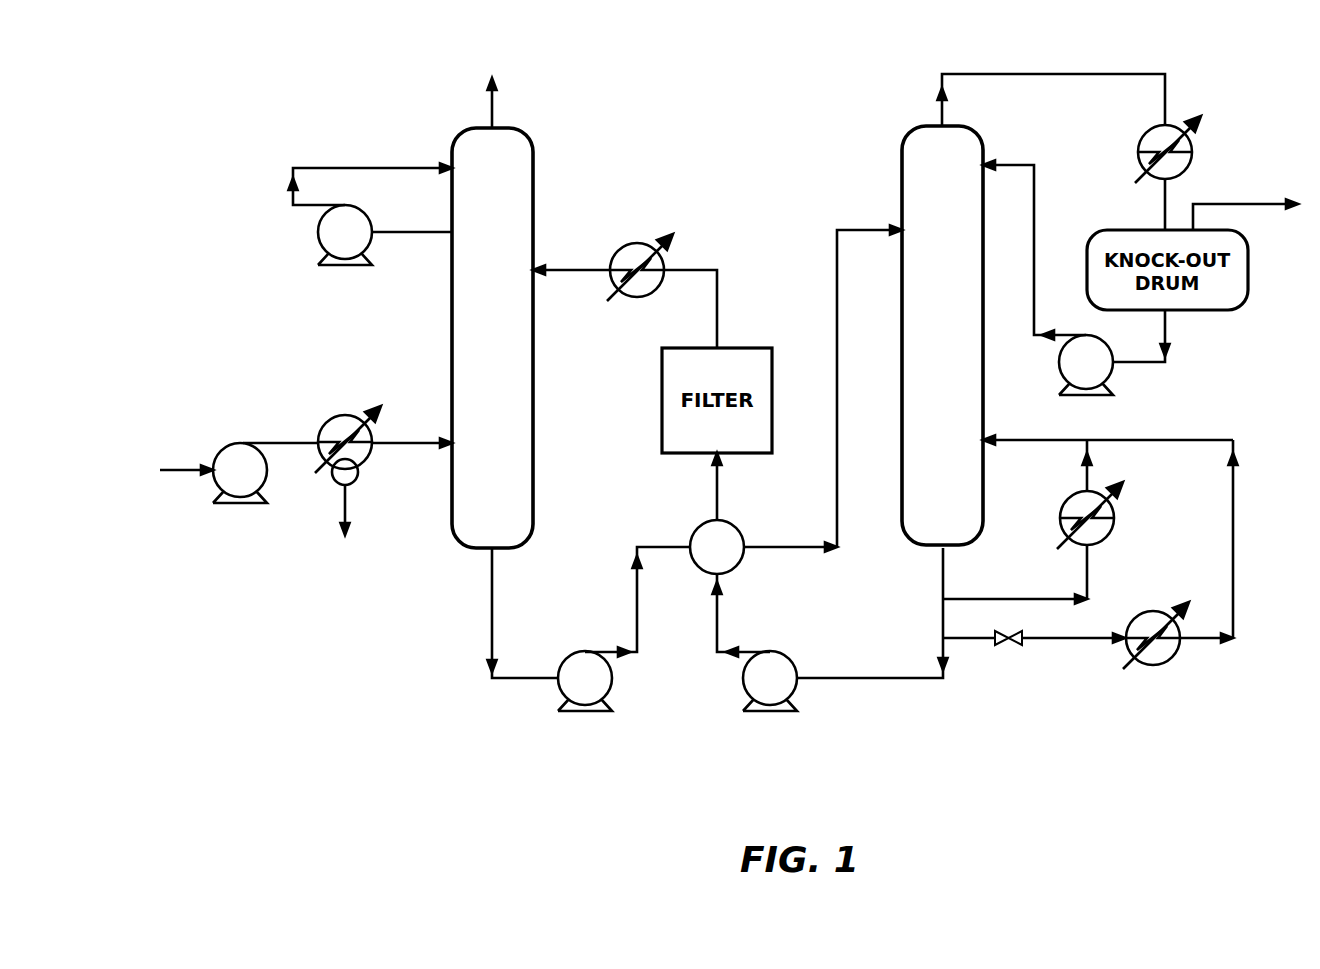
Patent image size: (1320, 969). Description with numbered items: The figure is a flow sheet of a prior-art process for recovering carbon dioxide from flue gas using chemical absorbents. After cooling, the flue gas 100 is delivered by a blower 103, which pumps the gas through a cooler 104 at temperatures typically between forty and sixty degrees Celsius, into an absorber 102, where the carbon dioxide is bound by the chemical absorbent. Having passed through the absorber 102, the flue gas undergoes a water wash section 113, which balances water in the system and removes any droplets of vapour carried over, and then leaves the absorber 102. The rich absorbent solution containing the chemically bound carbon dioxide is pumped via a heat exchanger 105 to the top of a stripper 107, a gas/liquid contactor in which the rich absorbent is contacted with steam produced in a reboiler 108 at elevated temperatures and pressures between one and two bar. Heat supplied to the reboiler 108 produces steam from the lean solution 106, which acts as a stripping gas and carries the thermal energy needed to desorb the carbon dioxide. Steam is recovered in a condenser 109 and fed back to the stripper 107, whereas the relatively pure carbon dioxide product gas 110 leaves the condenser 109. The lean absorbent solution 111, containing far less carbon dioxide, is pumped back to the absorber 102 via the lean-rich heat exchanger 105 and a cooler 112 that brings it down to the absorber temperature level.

The flue gas 100 is at (188, 468).
The absorber 102 is at (533, 148).
The blower 103 is at (213, 483).
The cooler 104 is at (330, 420).
The heat exchanger 105 is at (697, 527).
The lean solution 106 is at (837, 244).
The stripper 107 is at (902, 150).
The reboiler 108 is at (1062, 537).
The condenser 109 is at (1145, 172).
The CO2 product gas 110 is at (1250, 204).
The lean absorbent solution 111 is at (720, 497).
The cooler 112 is at (615, 287).
The water wash section 113 is at (293, 203).